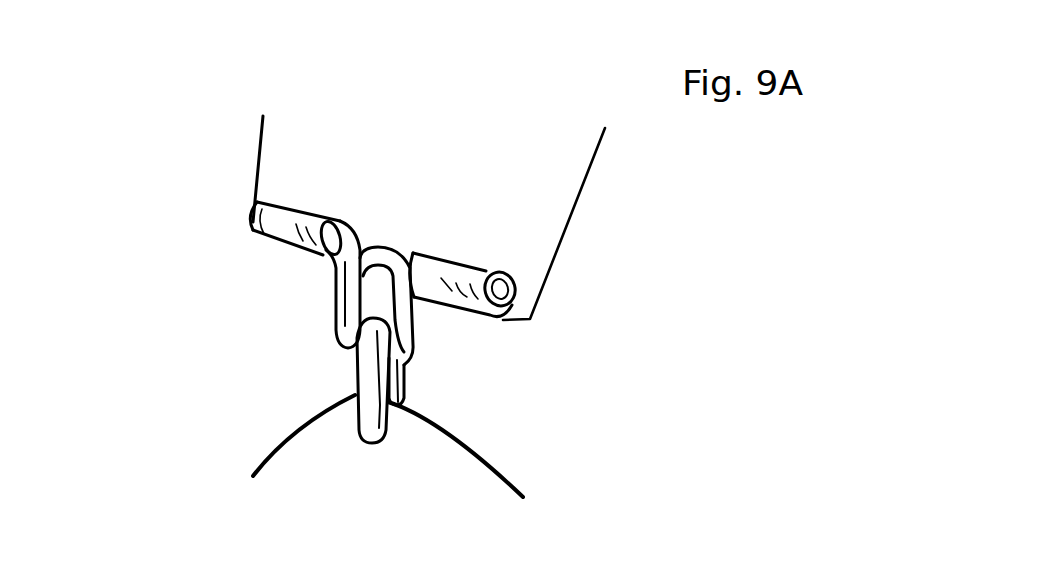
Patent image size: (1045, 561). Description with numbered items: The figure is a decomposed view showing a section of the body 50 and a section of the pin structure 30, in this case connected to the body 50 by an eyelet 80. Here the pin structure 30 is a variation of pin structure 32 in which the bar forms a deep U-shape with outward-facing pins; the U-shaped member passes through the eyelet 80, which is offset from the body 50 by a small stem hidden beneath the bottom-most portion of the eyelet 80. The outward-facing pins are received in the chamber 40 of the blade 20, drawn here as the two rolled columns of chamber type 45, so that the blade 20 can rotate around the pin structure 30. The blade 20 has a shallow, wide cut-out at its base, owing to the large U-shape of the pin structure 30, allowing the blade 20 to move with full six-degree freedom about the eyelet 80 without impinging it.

The blade 20 is at (507, 175).
The pin structure 30 is at (260, 315).
The pin structure 32 is at (347, 300).
The chamber 40 is at (461, 335).
The chamber type 45 is at (337, 251).
The body 50 is at (338, 451).
The eyelet 80 is at (403, 388).